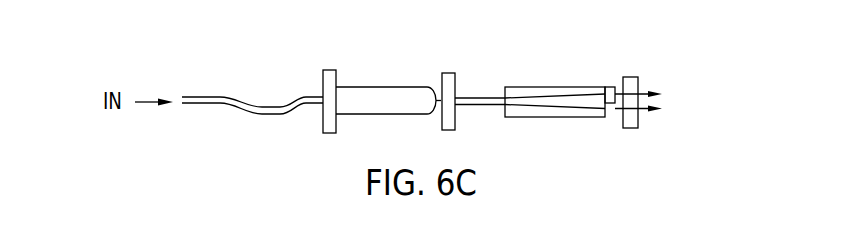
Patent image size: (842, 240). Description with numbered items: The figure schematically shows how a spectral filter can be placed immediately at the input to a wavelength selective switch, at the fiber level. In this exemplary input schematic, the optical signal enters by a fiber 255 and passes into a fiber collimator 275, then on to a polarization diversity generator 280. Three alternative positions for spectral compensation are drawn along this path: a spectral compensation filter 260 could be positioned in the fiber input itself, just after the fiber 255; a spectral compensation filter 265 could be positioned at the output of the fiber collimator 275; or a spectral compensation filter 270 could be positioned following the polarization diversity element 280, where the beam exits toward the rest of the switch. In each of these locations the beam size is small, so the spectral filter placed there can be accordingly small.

The fiber 255 is at (219, 97).
The spectral compensation filter 260 is at (330, 70).
The fiber collimator 275 is at (383, 87).
The spectral compensation filter 265 is at (451, 73).
The polarization diversity generator 280 is at (550, 87).
The spectral compensation filter 270 is at (635, 77).